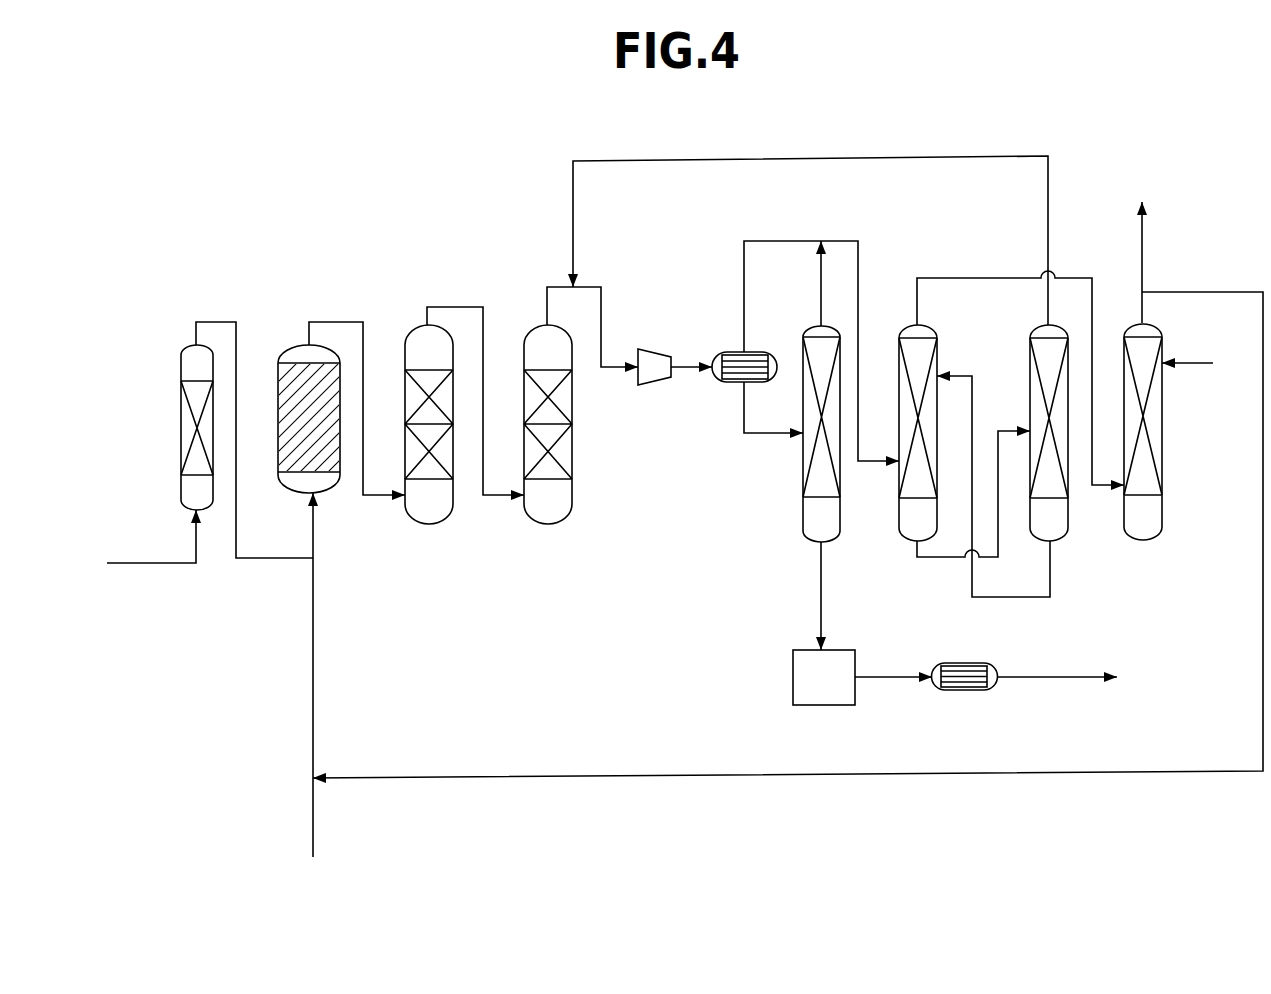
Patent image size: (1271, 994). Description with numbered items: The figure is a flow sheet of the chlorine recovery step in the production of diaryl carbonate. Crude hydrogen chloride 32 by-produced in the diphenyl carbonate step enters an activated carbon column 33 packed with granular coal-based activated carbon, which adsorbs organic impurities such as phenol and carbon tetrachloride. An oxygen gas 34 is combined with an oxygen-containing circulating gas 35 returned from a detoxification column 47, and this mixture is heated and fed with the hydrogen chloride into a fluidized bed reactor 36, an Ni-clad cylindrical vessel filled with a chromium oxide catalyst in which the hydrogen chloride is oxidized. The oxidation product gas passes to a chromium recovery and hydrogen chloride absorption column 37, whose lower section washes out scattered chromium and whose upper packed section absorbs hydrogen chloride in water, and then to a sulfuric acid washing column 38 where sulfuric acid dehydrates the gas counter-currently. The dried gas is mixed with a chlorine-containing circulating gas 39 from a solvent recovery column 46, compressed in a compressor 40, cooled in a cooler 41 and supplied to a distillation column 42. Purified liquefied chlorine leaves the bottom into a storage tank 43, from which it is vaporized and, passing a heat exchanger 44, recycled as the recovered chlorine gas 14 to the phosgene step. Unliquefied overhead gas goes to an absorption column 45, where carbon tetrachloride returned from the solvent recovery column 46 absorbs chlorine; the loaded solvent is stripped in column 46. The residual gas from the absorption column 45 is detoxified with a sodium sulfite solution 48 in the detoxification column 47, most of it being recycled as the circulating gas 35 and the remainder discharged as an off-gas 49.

The recovered chlorine gas 14 is at (1074, 679).
The crude hydrogen chloride gas 32 is at (134, 543).
The activated carbon column 33 is at (227, 440).
The oxygen gas 34 is at (309, 691).
The oxygen-containing circulating gas 35 is at (788, 535).
The fluidized bed reactor 36 is at (360, 421).
The chromium recovery and hydrogen chloride absorption column 37 is at (464, 432).
The sulfuric acid washing column 38 is at (581, 422).
The chlorine-containing circulating gas 39 is at (810, 228).
The compressor 40 is at (674, 383).
The cooler 41 is at (802, 351).
The distillation column 42 is at (803, 445).
The storage tank 43 is at (862, 695).
The heat exchanger 44 is at (965, 692).
The absorption column 45 is at (1000, 421).
The solvent recovery column 46 is at (1012, 461).
The detoxification column 47 is at (1163, 432).
The sodium sulfite solution 48 is at (1204, 364).
The off-gas 49 is at (1142, 248).